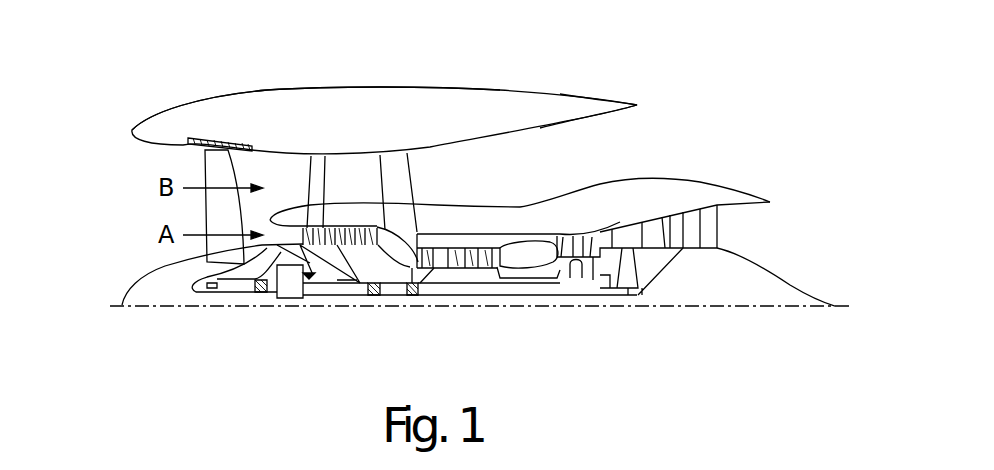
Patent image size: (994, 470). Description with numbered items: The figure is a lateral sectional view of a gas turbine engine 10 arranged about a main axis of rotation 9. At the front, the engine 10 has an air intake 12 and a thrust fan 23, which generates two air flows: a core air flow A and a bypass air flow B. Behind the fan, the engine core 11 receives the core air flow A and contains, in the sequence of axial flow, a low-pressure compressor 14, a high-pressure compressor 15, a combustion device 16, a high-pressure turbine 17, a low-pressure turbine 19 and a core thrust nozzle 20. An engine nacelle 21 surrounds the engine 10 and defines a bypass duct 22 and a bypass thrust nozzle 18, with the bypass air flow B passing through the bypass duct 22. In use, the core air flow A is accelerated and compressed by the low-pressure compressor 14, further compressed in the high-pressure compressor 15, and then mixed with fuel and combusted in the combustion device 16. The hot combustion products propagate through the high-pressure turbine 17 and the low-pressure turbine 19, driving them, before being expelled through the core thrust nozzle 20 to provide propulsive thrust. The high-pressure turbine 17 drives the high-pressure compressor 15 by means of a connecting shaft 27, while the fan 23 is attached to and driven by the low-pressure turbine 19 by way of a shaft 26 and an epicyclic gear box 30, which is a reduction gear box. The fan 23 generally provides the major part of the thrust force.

The main axis of rotation 9 is at (740, 306).
The gas turbine engine 10 is at (185, 100).
The engine core 11 is at (540, 226).
The air intake 12 is at (145, 162).
The low-pressure compressor 14 is at (342, 226).
The high-pressure compressor 15 is at (467, 255).
The combustion device 16 is at (528, 257).
The high-pressure turbine 17 is at (582, 240).
The bypass thrust nozzle 18 is at (721, 103).
The low-pressure turbine 19 is at (697, 238).
The core thrust nozzle 20 is at (768, 236).
The engine nacelle 21 is at (393, 98).
The bypass duct 22 is at (616, 139).
The thrust fan 23 is at (207, 220).
The shaft 26 is at (438, 293).
The connecting shaft 27 is at (495, 287).
The epicyclic gear box 30 is at (289, 288).